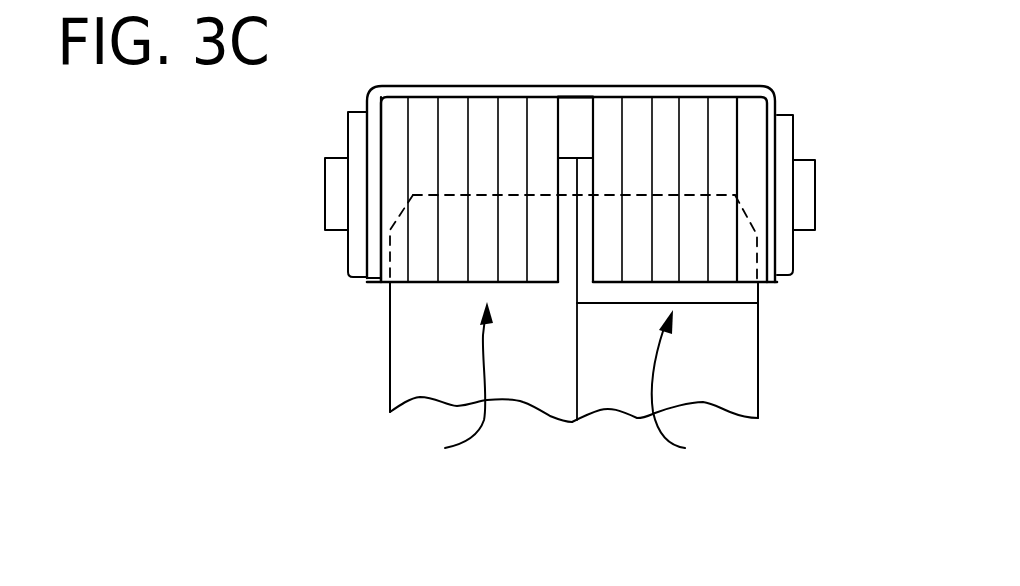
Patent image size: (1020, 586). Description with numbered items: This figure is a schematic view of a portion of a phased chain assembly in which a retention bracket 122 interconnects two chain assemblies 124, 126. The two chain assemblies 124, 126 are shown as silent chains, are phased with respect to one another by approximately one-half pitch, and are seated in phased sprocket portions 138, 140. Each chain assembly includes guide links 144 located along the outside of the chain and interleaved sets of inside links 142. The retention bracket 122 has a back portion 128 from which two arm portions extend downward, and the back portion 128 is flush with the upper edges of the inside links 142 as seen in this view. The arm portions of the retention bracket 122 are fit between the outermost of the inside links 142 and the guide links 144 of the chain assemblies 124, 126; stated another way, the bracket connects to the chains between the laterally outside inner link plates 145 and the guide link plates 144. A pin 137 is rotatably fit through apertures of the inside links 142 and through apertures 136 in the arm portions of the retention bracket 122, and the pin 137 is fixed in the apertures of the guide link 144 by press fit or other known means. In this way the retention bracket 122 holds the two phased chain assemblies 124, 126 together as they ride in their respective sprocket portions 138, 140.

The retention bracket 122 is at (770, 82).
The chain assembly 124 is at (443, 386).
The chain assembly 126 is at (690, 390).
The back portion 128 is at (632, 86).
The apertures 136 is at (372, 283).
The pin 137 is at (333, 186).
The phased sprocket portion 138 is at (407, 363).
The phased sprocket portion 140 is at (745, 383).
The inside links 142 is at (390, 325).
The guide links 144 is at (358, 124).
The inner link plates 145 is at (395, 116).